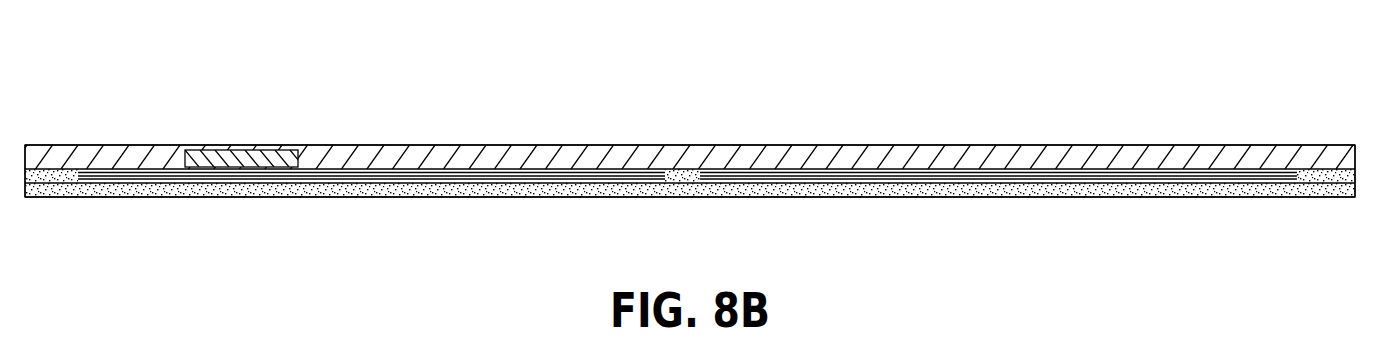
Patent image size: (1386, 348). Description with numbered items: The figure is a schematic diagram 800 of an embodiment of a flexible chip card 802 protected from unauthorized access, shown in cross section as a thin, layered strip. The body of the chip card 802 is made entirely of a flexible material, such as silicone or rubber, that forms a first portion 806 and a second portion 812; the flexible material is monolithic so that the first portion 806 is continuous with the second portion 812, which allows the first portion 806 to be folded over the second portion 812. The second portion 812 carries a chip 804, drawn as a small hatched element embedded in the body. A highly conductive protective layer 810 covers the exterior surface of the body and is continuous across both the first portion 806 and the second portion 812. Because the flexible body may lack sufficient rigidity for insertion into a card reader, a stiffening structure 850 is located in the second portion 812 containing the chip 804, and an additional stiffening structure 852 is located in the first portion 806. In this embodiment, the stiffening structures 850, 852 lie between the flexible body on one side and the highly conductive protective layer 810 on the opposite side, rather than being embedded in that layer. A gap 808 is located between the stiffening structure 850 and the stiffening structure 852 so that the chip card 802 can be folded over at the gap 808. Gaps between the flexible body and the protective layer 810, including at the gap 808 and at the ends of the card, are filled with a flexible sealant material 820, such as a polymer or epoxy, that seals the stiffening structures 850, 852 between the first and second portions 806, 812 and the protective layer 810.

The schematic diagram 800 is at (1282, 75).
The chip card 802 is at (1316, 126).
The chip 804 is at (260, 148).
The first portion 806 is at (998, 160).
The gap 808 is at (685, 178).
The highly conductive protective layer 810 is at (834, 172).
The second portion 812 is at (430, 160).
The flexible sealant material 820 is at (60, 174).
The stiffening structure 850 is at (370, 174).
The stiffening structure 852 is at (1152, 173).